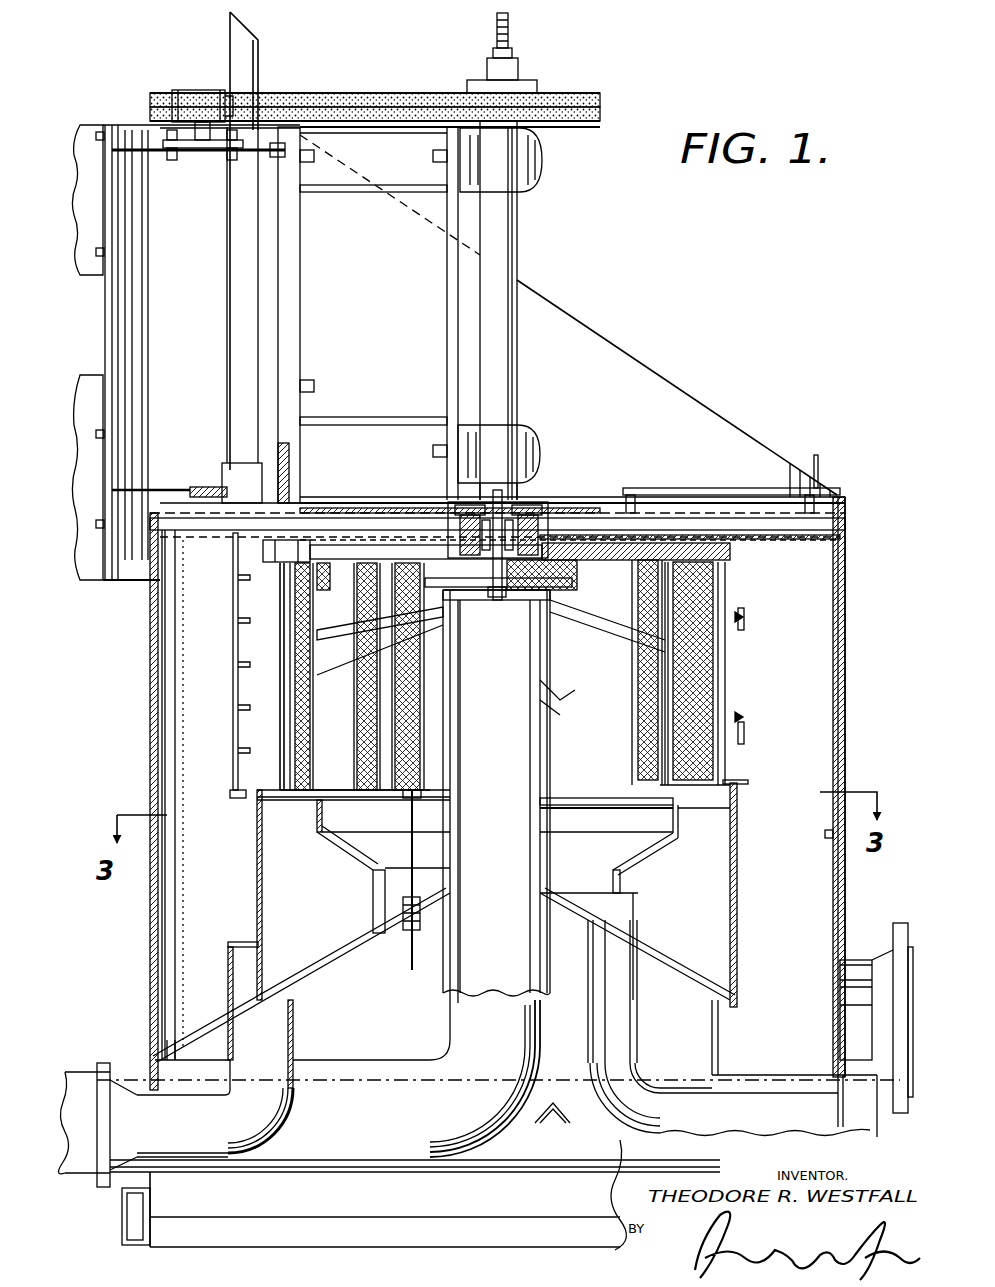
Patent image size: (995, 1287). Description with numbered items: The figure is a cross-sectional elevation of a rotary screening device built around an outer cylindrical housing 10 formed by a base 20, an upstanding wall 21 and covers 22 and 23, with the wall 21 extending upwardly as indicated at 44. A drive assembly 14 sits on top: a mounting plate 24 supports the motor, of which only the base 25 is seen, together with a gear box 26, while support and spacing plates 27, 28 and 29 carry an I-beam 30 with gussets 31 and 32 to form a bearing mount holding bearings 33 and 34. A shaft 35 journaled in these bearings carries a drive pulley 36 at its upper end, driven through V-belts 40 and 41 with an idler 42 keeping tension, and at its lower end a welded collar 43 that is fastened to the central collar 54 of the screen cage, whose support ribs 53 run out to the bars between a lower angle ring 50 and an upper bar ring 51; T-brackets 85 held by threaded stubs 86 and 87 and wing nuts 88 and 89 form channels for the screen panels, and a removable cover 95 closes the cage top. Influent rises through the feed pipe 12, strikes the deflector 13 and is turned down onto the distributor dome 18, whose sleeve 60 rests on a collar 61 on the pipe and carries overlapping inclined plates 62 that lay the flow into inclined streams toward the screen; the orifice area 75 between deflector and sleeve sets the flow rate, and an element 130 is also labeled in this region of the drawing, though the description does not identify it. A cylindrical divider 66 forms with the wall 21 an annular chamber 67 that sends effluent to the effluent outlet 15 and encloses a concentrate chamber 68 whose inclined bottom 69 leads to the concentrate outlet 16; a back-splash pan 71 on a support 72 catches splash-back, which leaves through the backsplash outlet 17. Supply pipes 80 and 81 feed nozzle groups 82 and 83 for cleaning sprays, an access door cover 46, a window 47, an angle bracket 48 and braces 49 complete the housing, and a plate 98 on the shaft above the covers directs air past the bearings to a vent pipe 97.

The housing 10 is at (850, 524).
The influent inlet feed pipe 12 is at (543, 752).
The influent impingement deflector 13 is at (718, 498).
The drive assembly 14 is at (520, 380).
The effluent outlet 15 is at (852, 957).
The concentrate outlet 16 is at (490, 576).
The backsplash outlet 17 is at (640, 1064).
The distributor dome 18 is at (585, 600).
The base 20 is at (122, 1226).
The upstanding wall 21 is at (150, 760).
The cover 22 is at (610, 512).
The cover 23 is at (425, 510).
The mounting plate 24 is at (108, 287).
The motor base 25 is at (85, 385).
The gear box 26 is at (88, 135).
The support and spacing plate 27 is at (140, 490).
The support and spacing plate 28 is at (145, 150).
The support and spacing plate 29 is at (300, 285).
The I-beam 30 is at (430, 325).
The gusset 31 is at (380, 192).
The gusset 32 is at (385, 418).
The bearing 33 is at (540, 160).
The bearing 34 is at (535, 432).
The shaft 35 is at (505, 240).
The drive pulley 36 is at (560, 95).
The V-belt 40 is at (305, 98).
The V-belt 41 is at (363, 113).
The idler 42 is at (200, 105).
The collar 43 is at (540, 520).
The upward extension of wall 44 is at (585, 322).
The access door cover 46 is at (756, 485).
The window 47 is at (845, 628).
The angle bracket 48 is at (833, 640).
The brace 49 is at (555, 1175).
The lower angle ring 50 is at (748, 782).
The upper bar ring 51 is at (725, 558).
The support rib 53 is at (385, 518).
The central collar 54 is at (450, 553).
The sleeve 60 is at (550, 690).
The collar 61 is at (560, 708).
The inclined plate 62 is at (590, 627).
The divider 66 is at (257, 912).
The annular chamber 67 is at (480, 973).
The concentrate chamber 68 is at (493, 852).
The inclined bottom 69 is at (350, 952).
The back-splash pan 71 is at (318, 830).
The support 72 is at (372, 900).
The orifice area 75 is at (470, 592).
The supply pipe 80 is at (233, 625).
The supply pipe 81 is at (318, 743).
The nozzles 82 is at (270, 588).
The nozzles 83 is at (297, 702).
The T-bracket 85 is at (295, 636).
The threaded stub 86 is at (742, 625).
The threaded stub 87 is at (742, 740).
The wing nut 88 is at (742, 616).
The wing nut 89 is at (742, 720).
The removable cover 95 is at (620, 540).
The vent pipe 97 is at (242, 67).
The plate 98 is at (525, 508).
The deflector plate 130 is at (412, 598).